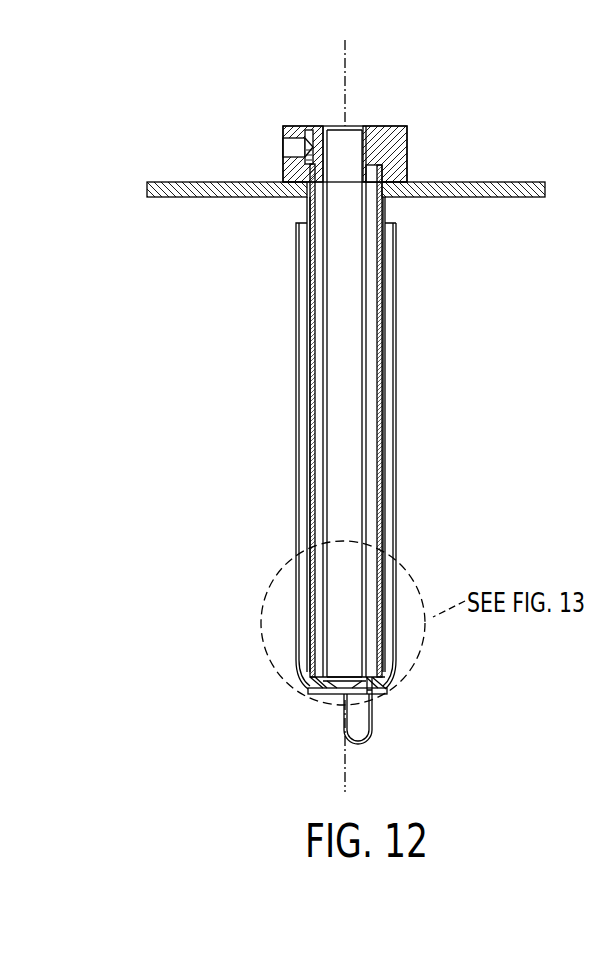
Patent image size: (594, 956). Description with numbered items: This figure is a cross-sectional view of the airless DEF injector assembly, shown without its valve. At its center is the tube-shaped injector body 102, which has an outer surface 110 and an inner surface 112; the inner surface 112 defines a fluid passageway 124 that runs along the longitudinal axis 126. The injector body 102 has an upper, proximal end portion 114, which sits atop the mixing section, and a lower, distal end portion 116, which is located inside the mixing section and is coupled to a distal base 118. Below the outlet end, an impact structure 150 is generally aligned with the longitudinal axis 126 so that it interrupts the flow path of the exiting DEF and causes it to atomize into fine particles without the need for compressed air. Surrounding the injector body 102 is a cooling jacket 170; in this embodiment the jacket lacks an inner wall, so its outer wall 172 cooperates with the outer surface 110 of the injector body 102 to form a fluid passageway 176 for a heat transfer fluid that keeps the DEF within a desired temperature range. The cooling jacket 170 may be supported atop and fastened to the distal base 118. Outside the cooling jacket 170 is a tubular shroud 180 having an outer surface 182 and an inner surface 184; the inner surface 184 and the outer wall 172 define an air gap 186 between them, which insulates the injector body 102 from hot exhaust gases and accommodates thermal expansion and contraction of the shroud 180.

The injector body 102 is at (366, 127).
The outer surface 110 is at (368, 246).
The inner surface 112 is at (358, 262).
The proximal end portion 114 is at (302, 109).
The distal end portion 116 is at (392, 705).
The distal base 118 is at (322, 687).
The fluid passageway 124 is at (356, 292).
The longitudinal axis 126 is at (349, 47).
The impact structure 150 is at (342, 707).
The cooling jacket 170 is at (308, 280).
The outer wall 172 is at (310, 347).
The fluid passageway 176 is at (315, 398).
The tubular shroud 180 is at (395, 440).
The outer surface 182 is at (395, 483).
The inner surface 184 is at (396, 375).
The air gap 186 is at (394, 526).